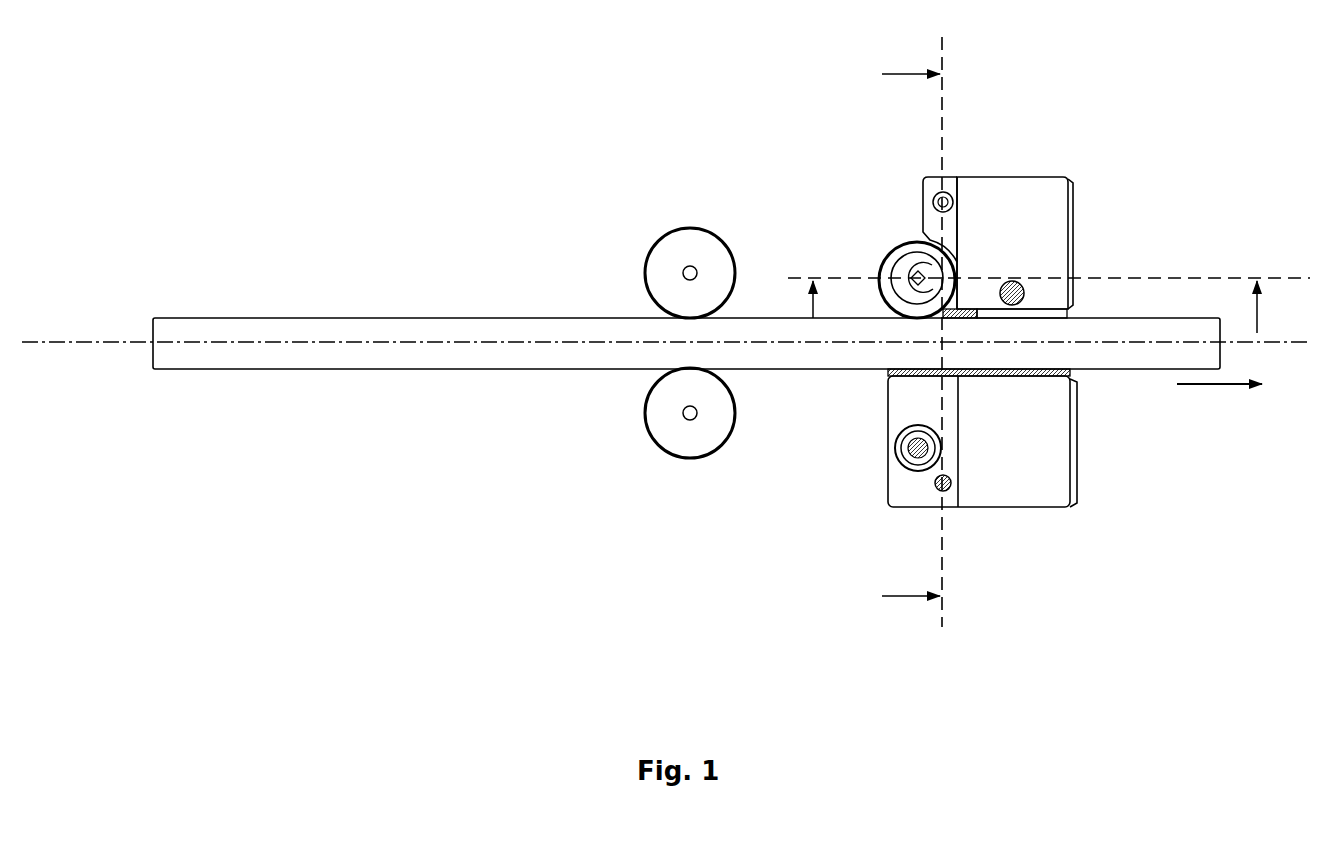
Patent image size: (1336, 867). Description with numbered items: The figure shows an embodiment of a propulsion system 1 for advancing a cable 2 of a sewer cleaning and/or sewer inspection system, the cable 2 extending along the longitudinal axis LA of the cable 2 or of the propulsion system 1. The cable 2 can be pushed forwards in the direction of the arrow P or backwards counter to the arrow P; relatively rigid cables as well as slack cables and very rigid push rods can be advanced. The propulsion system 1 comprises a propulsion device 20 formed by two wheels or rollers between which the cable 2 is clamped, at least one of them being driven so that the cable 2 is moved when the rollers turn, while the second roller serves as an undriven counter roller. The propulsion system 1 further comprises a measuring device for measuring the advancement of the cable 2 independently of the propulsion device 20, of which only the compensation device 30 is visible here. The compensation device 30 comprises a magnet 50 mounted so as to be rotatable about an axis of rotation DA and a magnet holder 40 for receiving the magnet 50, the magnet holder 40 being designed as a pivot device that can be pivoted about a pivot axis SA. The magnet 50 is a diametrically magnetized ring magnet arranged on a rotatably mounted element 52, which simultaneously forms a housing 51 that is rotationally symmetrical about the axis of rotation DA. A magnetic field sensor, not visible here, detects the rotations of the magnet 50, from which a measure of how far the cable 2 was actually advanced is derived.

The propulsion system 1 is at (689, 71).
The cable 2 is at (1194, 327).
The propulsion device 20 is at (643, 389).
The compensation device 30 is at (1040, 292).
The magnet holder 40 is at (980, 234).
The rotatably mounted magnet 50 is at (955, 230).
The housing 51 is at (859, 273).
The rotatably mounted element 52 is at (879, 267).
The axis of rotation DA is at (923, 275).
The pivot axis SA is at (1014, 290).
The longitudinal axis LA is at (666, 331).
The arrow P is at (1219, 403).